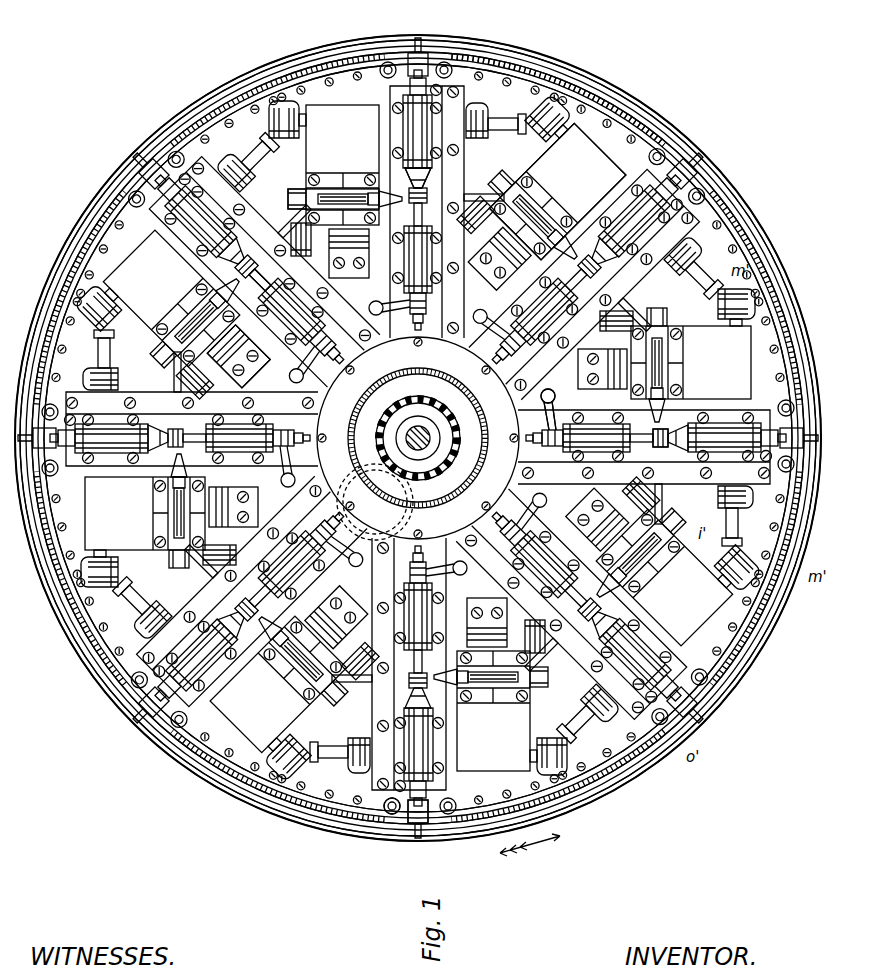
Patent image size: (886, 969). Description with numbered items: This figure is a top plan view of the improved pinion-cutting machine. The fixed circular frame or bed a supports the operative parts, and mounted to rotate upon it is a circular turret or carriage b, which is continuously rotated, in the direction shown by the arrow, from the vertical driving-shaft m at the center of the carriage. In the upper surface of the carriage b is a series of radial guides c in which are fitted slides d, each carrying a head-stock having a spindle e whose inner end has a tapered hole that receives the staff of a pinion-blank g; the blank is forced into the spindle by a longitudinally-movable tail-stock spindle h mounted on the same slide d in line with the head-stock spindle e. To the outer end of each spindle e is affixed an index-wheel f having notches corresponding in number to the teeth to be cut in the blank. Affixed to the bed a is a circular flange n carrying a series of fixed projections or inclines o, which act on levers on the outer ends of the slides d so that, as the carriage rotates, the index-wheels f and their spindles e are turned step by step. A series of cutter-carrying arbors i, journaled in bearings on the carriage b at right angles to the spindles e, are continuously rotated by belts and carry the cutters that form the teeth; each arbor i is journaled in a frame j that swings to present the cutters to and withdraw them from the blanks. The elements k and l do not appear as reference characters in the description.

The circular frame or bed a is at (650, 118).
The circular turret or carriage b is at (604, 88).
The radial guides c is at (424, 451).
The slides d is at (400, 160).
The head-stock spindle e is at (410, 858).
The index-wheels f is at (164, 756).
The pinion-blank g is at (262, 282).
The tail-stock spindles h is at (402, 194).
The cutter-carrying arbors i is at (661, 447).
The frames j is at (404, 435).
The plate rim k is at (76, 246).
The block l is at (246, 348).
The vertical driving-shaft m is at (418, 438).
The circular flange n is at (700, 728).
The fixed projections or inclines o is at (300, 800).